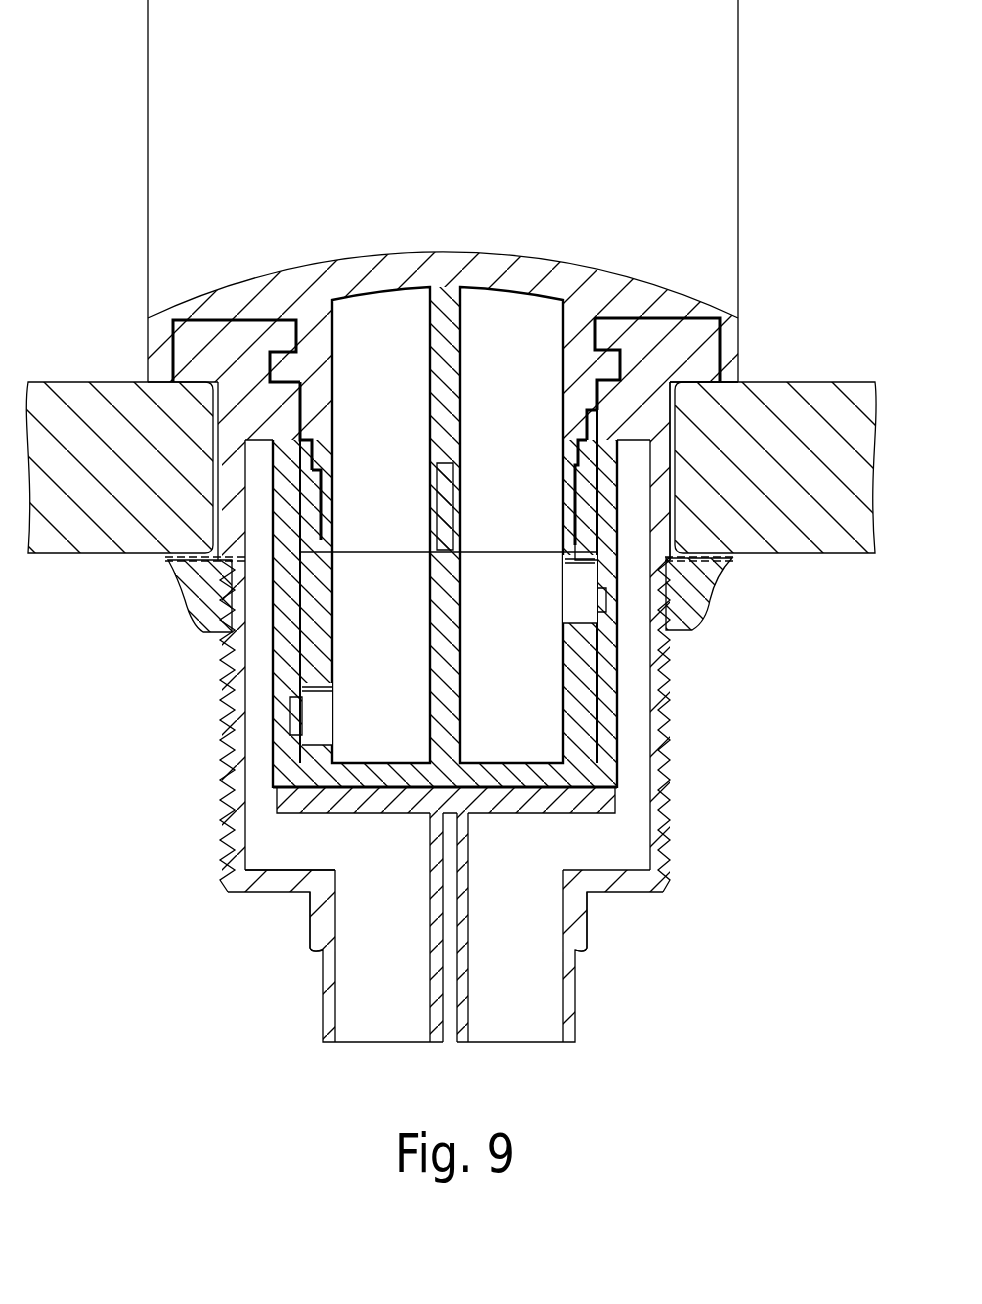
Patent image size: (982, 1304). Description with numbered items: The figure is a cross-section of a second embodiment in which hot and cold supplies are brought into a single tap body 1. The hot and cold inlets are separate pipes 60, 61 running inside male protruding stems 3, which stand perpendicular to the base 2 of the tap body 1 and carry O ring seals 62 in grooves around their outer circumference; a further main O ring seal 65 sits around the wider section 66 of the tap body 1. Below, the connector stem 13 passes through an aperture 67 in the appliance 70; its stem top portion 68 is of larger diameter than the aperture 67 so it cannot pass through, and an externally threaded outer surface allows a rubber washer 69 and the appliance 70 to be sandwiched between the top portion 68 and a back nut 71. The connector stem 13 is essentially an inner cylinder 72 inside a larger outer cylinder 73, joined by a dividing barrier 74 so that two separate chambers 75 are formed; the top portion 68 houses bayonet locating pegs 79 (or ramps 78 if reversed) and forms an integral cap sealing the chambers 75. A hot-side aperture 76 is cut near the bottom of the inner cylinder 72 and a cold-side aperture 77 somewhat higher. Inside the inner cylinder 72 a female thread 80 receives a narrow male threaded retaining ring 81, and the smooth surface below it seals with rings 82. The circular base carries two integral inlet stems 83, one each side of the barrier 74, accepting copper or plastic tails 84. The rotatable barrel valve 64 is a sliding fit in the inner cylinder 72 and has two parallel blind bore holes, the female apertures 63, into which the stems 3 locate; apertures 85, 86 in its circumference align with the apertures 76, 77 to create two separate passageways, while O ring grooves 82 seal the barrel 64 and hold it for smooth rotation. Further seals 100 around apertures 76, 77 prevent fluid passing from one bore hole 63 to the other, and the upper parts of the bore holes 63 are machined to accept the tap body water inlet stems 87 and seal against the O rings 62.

The tap body 1 is at (757, 82).
The base 2 is at (222, 297).
The male protruding stems 3 is at (442, 383).
The connector stem 13 is at (624, 963).
The pipe 60 is at (386, 300).
The pipe 61 is at (502, 300).
The O ring seals 62 is at (327, 496).
The female apertures 63 is at (360, 615).
The rotatable barrel valve 64 is at (580, 753).
The main O ring seal 65 is at (605, 405).
The wider section 66 is at (603, 406).
The aperture 67 is at (203, 440).
The stem top portion 68 is at (213, 343).
The rubber washer 69 is at (742, 553).
The appliance 70 is at (812, 522).
The back nut 71 is at (712, 602).
The inner cylinder 72 is at (602, 799).
The outer cylinder 73 is at (216, 728).
The dividing barrier 74 is at (438, 876).
The chambers 75 is at (262, 808).
The aperture 76 is at (276, 719).
The aperture 77 is at (578, 550).
The ramps 78 is at (605, 325).
The bayonet locating pegs 79 is at (632, 300).
The female thread 80 is at (317, 437).
The retaining ring 81 is at (585, 450).
The O ring grooves 82 is at (320, 538).
The inlet stems 83 is at (592, 917).
The tails 84 is at (530, 1033).
The aperture 85 is at (260, 804).
The aperture 86 is at (575, 600).
The water inlet stems 87 is at (296, 534).
The seals 100 is at (290, 733).